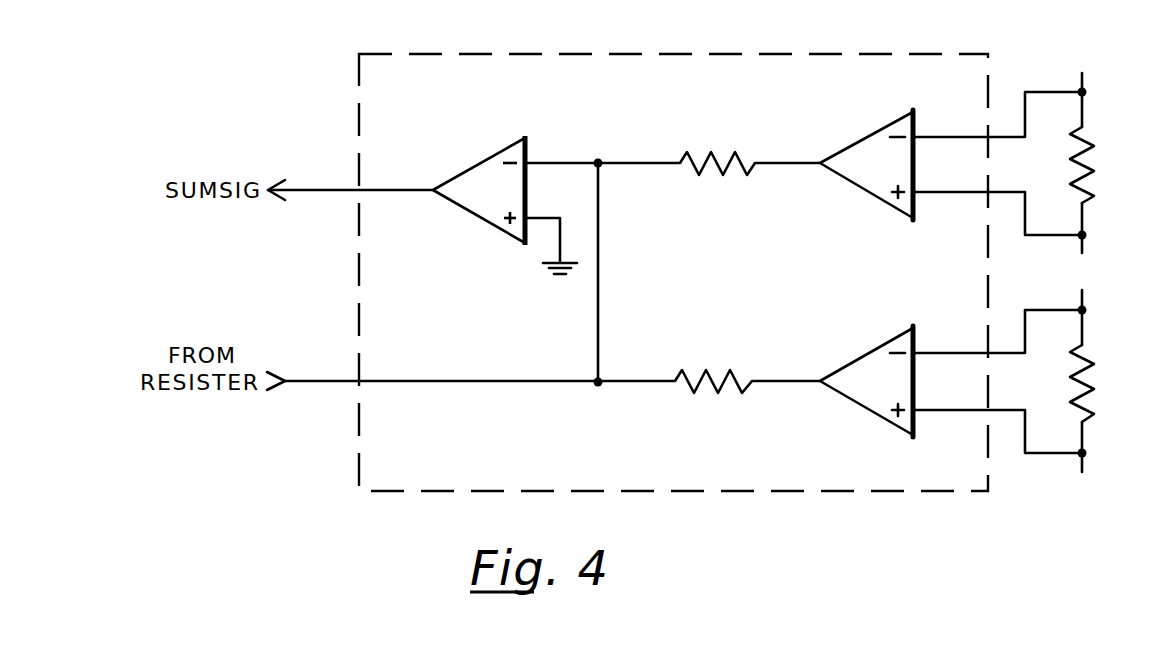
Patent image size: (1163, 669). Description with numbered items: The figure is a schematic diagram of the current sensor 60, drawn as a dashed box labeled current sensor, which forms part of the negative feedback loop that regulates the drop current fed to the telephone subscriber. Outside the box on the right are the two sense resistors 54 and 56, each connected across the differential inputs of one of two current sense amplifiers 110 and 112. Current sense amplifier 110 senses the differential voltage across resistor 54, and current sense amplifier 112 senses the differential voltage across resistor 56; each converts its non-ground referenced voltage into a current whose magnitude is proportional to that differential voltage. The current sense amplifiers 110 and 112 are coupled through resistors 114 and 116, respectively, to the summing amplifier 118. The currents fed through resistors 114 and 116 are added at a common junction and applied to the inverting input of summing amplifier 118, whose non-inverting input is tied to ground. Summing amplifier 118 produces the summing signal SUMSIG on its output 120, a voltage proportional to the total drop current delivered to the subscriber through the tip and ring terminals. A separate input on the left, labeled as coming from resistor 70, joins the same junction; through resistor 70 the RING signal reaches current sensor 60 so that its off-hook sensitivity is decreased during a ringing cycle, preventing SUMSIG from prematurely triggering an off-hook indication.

The current sensor 60 is at (633, 52).
The resistor 70 is at (391, 395).
The output 120 is at (318, 187).
The summing amplifier 118 is at (492, 158).
The resistor 114 is at (706, 148).
The resistor 116 is at (704, 368).
The current sense amplifier 110 is at (884, 128).
The current sense amplifier 112 is at (880, 345).
The resistor 54 is at (1097, 148).
The resistor 56 is at (1097, 366).